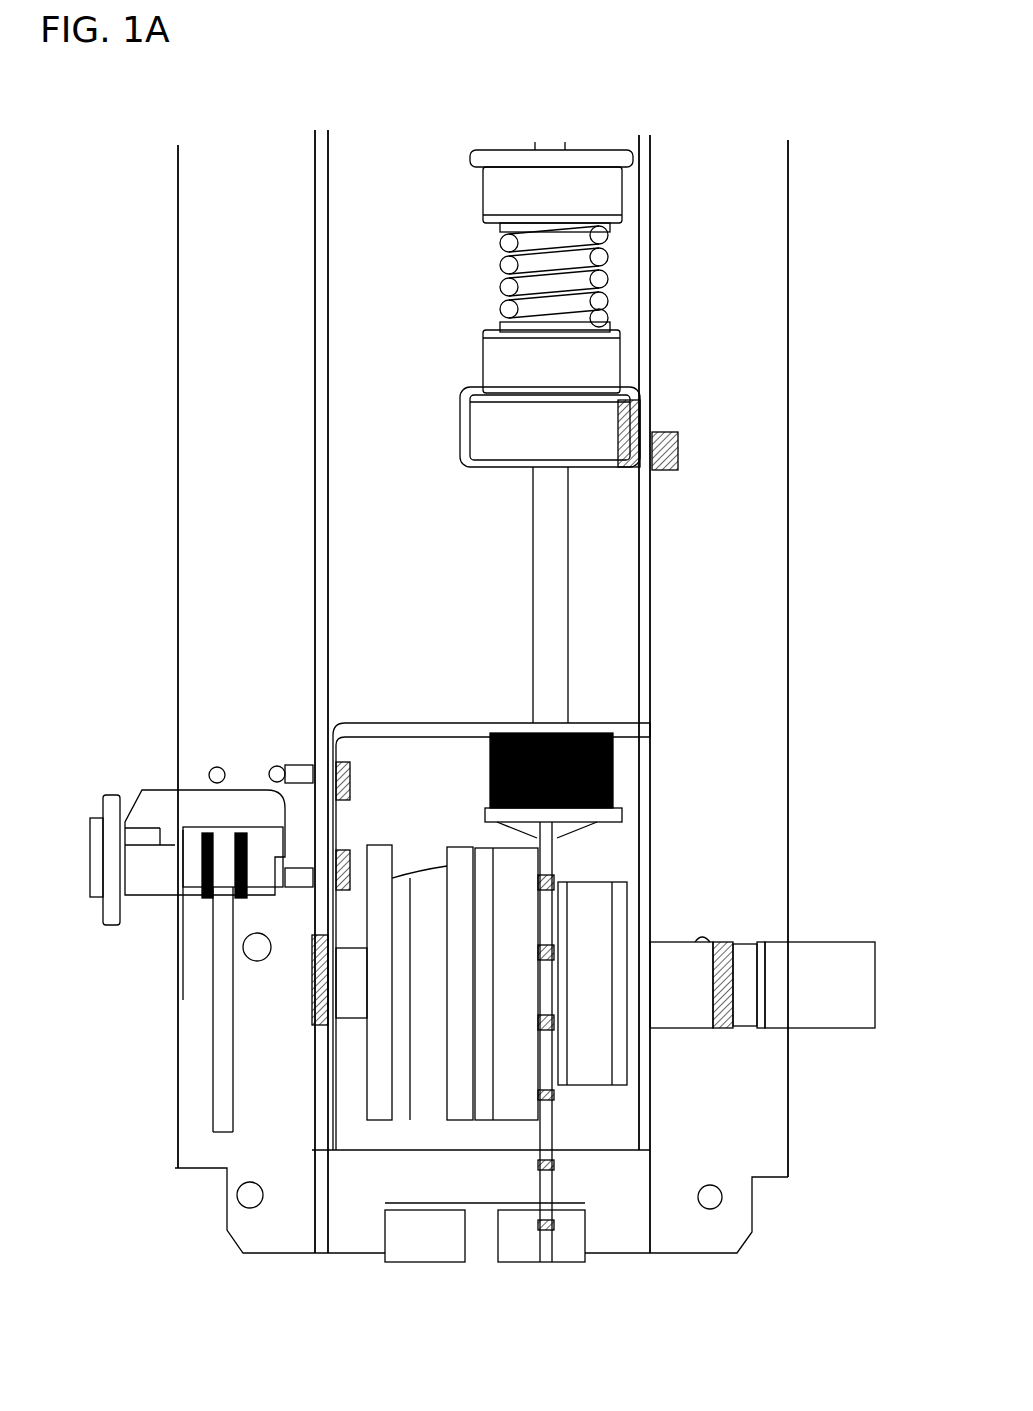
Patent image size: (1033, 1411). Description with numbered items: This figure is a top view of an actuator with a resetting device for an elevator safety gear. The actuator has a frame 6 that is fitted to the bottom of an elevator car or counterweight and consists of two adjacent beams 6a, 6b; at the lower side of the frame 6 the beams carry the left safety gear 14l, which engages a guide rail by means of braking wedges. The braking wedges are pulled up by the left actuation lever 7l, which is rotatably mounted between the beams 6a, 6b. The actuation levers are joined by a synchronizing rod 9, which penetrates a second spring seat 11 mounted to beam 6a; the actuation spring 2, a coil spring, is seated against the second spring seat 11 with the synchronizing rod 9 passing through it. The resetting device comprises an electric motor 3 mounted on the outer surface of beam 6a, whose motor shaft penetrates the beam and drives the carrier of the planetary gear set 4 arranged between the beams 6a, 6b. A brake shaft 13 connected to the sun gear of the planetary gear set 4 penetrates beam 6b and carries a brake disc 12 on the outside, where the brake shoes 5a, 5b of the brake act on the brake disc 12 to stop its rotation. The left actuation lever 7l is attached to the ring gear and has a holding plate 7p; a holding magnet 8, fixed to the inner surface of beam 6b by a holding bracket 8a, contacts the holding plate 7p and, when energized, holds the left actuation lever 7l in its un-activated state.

The actuation spring 2 is at (490, 283).
The electric motor 3 is at (772, 983).
The planetary gear set 4 is at (470, 1085).
The brake shoe 5a is at (183, 830).
The brake shoe 5b is at (238, 830).
The frame 6 is at (693, 190).
The beam 6a is at (740, 250).
The beam 6b is at (262, 432).
The left actuation lever 7l is at (547, 1138).
The holding plate 7p is at (575, 820).
The holding magnet 8 is at (612, 733).
The holding bracket 8a is at (422, 725).
The synchronizing rod 9 is at (560, 528).
The second spring seat 11 is at (585, 370).
The brake disc 12 is at (227, 847).
The brake shaft 13 is at (343, 985).
The left safety gear 14l is at (610, 1208).